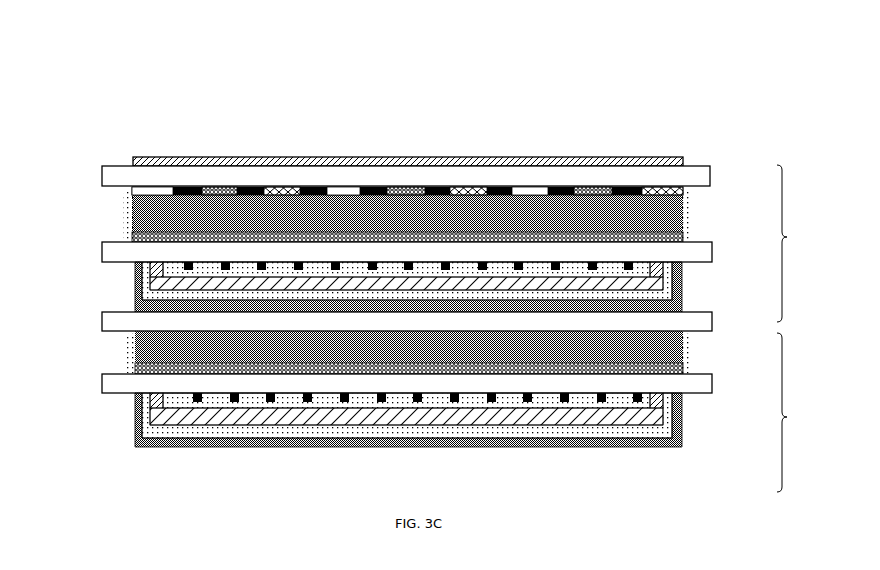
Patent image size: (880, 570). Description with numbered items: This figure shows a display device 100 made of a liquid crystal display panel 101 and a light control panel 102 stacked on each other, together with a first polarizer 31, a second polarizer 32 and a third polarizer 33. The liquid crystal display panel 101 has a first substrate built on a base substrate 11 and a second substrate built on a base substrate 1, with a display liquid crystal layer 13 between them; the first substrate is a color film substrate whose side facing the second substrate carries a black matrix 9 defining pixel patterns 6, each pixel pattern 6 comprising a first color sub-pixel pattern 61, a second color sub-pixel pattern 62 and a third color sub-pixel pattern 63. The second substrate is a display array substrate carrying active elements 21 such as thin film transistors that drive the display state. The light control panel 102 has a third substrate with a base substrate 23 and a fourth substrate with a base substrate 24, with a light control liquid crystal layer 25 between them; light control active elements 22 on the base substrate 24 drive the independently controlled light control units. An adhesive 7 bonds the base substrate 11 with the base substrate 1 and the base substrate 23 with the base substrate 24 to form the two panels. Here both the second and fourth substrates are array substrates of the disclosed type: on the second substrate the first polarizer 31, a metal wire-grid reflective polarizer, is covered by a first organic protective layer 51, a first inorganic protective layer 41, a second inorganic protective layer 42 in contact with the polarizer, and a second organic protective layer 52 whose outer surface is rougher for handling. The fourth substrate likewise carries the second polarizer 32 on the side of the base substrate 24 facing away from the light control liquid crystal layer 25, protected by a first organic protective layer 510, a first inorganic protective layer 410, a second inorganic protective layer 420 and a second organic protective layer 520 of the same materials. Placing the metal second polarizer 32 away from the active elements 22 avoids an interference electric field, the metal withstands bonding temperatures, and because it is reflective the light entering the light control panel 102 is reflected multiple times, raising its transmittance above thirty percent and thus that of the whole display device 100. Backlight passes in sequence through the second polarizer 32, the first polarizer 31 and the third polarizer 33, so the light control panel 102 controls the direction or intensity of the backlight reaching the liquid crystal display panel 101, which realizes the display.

The display device 100 is at (166, 55).
The liquid crystal display panel 101 is at (797, 243).
The light control panel 102 is at (798, 412).
The base substrate 1 is at (706, 252).
The pixel patterns 6 is at (407, 142).
The first color sub-pixel pattern 61 is at (158, 191).
The second color sub-pixel pattern 62 is at (221, 191).
The third color sub-pixel pattern 63 is at (473, 159).
The adhesive 7 is at (123, 211).
The black matrix 9 is at (378, 188).
The base substrate 11 is at (694, 178).
The display liquid crystal layer 13 is at (683, 217).
The active elements 21 is at (683, 237).
The light control active elements 22 is at (636, 374).
The base substrate 23 is at (692, 322).
The base substrate 24 is at (702, 385).
The light control liquid crystal layer 25 is at (682, 352).
The first polarizer 31 is at (185, 265).
The second polarizer 32 is at (190, 397).
The third polarizer 33 is at (133, 160).
The first inorganic protective layer 41 is at (672, 298).
The second inorganic protective layer 42 is at (657, 265).
The first organic protective layer 51 is at (662, 282).
The second organic protective layer 52 is at (708, 313).
The first inorganic protective layer 410 is at (667, 430).
The second inorganic protective layer 420 is at (650, 401).
The first organic protective layer 510 is at (663, 415).
The second organic protective layer 520 is at (670, 443).